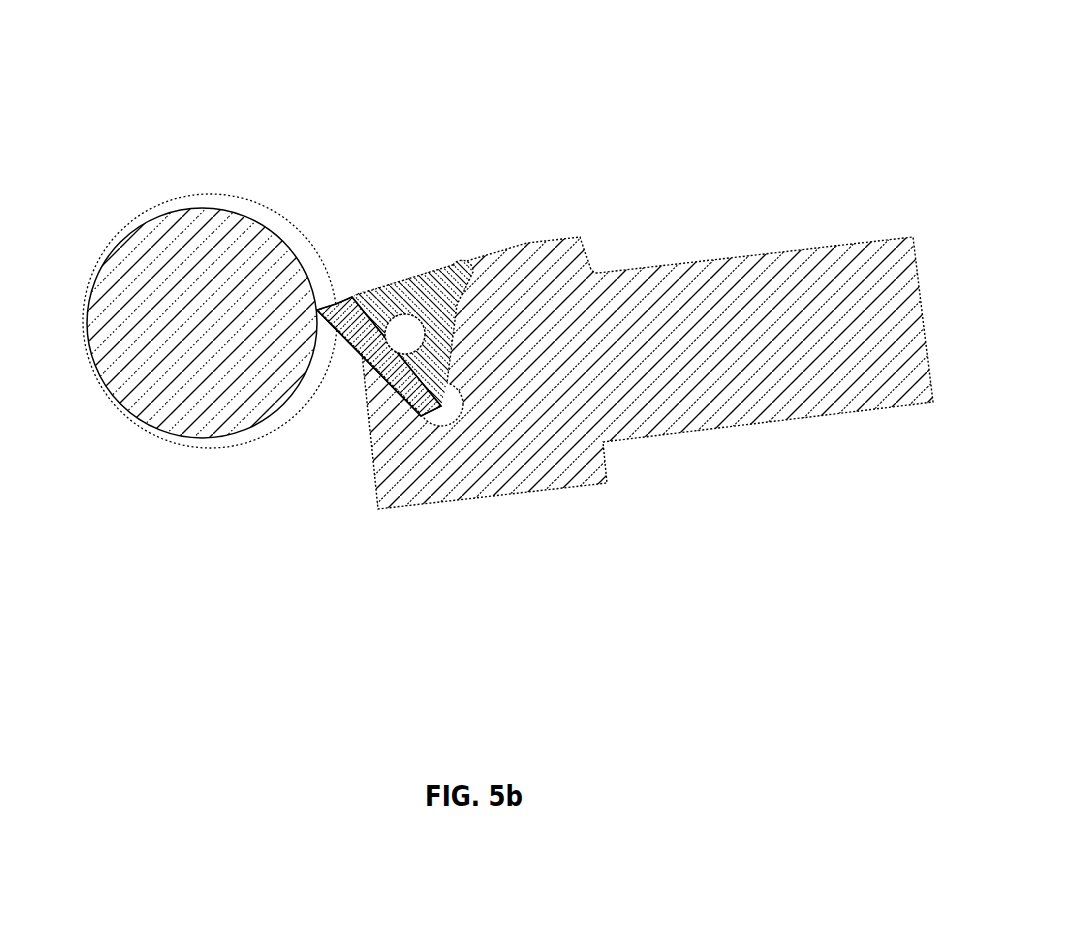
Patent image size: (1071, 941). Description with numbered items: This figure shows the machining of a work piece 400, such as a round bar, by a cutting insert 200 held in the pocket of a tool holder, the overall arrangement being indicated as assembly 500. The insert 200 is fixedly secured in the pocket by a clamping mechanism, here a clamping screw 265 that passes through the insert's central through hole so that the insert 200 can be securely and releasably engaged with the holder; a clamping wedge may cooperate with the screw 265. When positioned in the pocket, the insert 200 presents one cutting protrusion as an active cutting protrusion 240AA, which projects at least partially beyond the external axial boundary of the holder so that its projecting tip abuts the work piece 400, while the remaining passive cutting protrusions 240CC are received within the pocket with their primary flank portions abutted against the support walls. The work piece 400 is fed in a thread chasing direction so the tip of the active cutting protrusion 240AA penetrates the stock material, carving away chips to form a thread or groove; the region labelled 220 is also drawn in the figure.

The cutting tool assembly 500 is at (186, 140).
The work piece 400 is at (112, 397).
The cutting insert 200 is at (357, 362).
The clamp 220 is at (412, 290).
The clamping screw 265 is at (417, 333).
The active cutting protrusion 240AA is at (320, 307).
The passive cutting protrusions 240CC is at (420, 414).